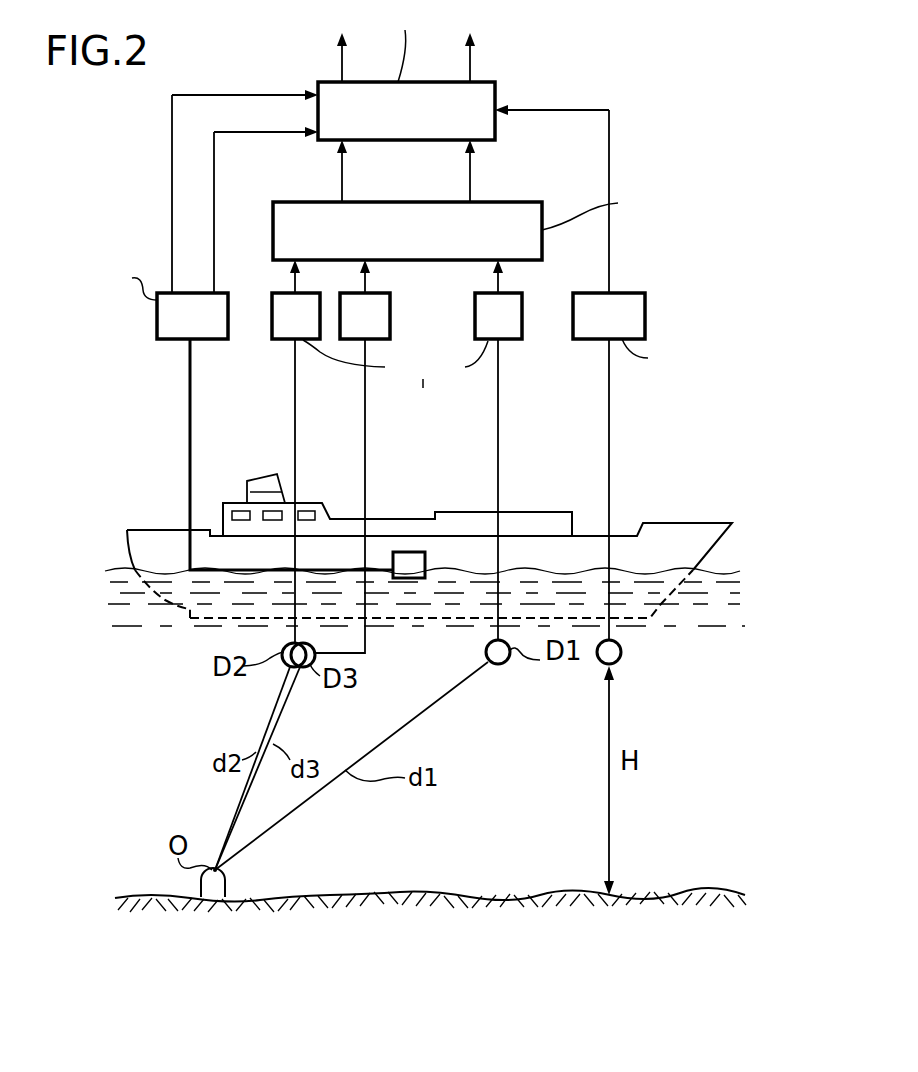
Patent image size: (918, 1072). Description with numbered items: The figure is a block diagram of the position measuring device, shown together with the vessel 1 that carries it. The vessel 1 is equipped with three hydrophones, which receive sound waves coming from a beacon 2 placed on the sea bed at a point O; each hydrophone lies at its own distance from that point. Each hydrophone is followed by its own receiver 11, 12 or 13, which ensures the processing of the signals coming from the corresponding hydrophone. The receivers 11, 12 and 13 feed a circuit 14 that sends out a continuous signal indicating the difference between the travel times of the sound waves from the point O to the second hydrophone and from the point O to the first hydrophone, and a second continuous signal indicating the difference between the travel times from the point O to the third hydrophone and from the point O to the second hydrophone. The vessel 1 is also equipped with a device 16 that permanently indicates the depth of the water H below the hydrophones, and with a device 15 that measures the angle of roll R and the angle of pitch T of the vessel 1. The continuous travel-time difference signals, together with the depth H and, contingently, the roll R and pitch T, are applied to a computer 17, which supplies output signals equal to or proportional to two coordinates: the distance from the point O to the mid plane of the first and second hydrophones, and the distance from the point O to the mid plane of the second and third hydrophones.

The vessel 1 is at (670, 530).
The beacon 2 is at (228, 885).
The receiver 11 is at (500, 312).
The receiver 12 is at (290, 304).
The receiver 13 is at (375, 310).
The circuit 14 is at (290, 211).
The device measuring the angle of roll and the angle of pitch 15 is at (185, 324).
The device indicating the depth of the water 16 is at (632, 312).
The computer 17 is at (490, 100).